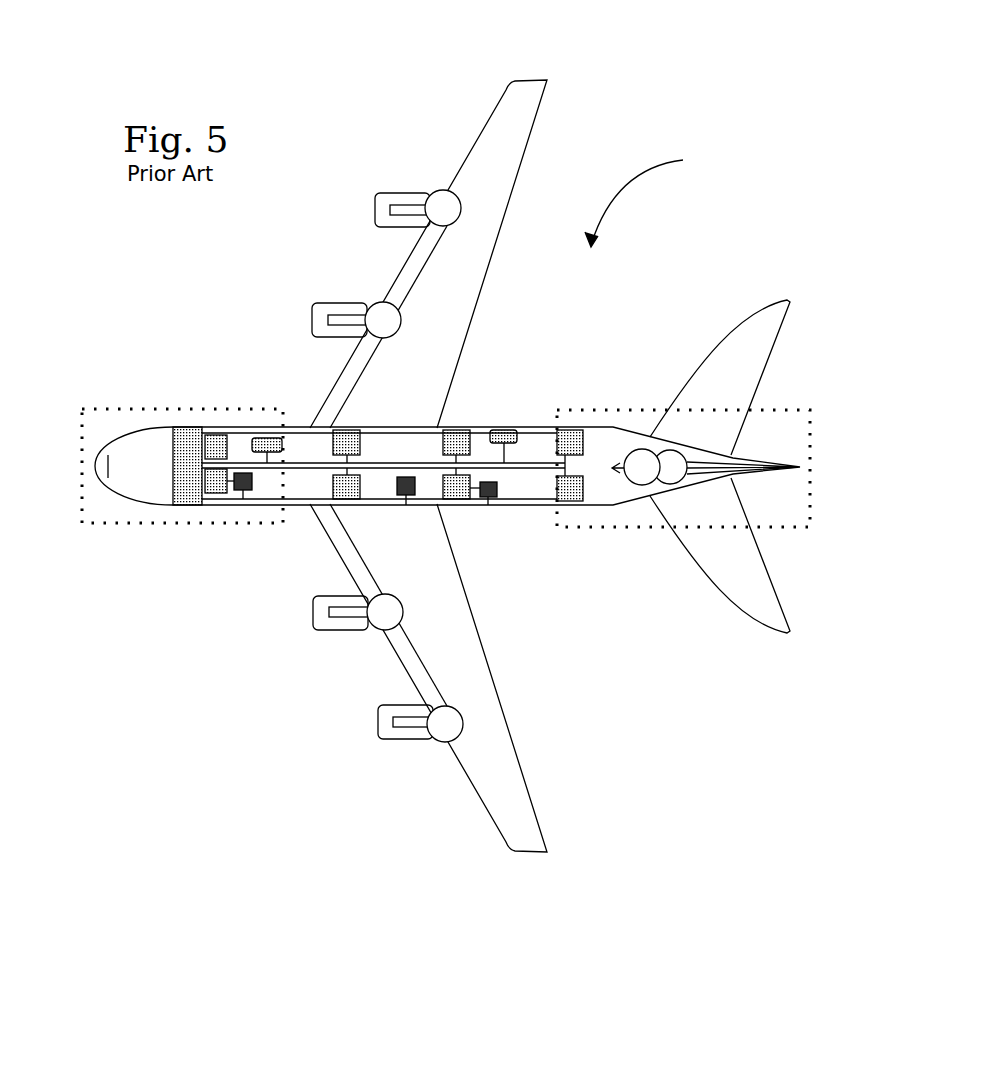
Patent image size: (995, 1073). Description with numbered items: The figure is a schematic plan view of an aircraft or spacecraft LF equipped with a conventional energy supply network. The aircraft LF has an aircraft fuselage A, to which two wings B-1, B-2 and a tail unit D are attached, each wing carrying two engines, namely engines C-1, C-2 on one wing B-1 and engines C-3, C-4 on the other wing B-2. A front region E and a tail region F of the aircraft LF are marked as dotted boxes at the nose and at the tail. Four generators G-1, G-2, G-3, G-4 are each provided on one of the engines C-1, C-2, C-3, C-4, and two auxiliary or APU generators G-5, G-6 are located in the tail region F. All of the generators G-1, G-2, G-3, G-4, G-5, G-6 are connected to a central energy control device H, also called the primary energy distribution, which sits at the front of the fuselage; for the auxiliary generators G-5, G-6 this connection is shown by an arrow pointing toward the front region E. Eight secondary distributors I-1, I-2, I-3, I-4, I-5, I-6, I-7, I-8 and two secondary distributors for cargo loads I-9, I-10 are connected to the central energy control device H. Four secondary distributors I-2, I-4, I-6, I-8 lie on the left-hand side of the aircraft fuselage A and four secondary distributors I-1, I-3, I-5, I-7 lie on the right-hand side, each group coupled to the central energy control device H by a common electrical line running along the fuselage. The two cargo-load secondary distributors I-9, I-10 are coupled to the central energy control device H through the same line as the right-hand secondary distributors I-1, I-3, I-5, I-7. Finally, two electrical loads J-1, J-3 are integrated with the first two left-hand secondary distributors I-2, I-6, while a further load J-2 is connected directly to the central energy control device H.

The aircraft fuselage A is at (383, 437).
The wing B-1 is at (502, 127).
The wing B-2 is at (507, 810).
The engine C-1 is at (378, 203).
The engine C-2 is at (320, 322).
The engine C-3 is at (315, 618).
The engine C-4 is at (388, 730).
The tail unit D is at (767, 320).
The front region E is at (93, 512).
The tail region F is at (800, 517).
The generator G-1 is at (443, 207).
The generator G-2 is at (382, 312).
The generator G-3 is at (385, 615).
The generator G-4 is at (445, 727).
The auxiliary (APU) generator G-5 is at (637, 458).
The auxiliary (APU) generator G-6 is at (670, 473).
The central energy control device H is at (178, 438).
The secondary distributor I-1 is at (217, 442).
The secondary distributor I-2 is at (215, 485).
The secondary distributor I-3 is at (330, 428).
The secondary distributor I-4 is at (340, 490).
The secondary distributor I-5 is at (463, 433).
The secondary distributor I-6 is at (458, 490).
The secondary distributor I-7 is at (569, 438).
The secondary distributor I-8 is at (570, 497).
The secondary distributor for cargo loads I-9 is at (263, 440).
The secondary distributor for cargo loads I-10 is at (510, 435).
The electrical load J-1 is at (245, 490).
The load J-2 is at (408, 490).
The electrical load J-3 is at (497, 495).
The aircraft or spacecraft LF is at (655, 190).